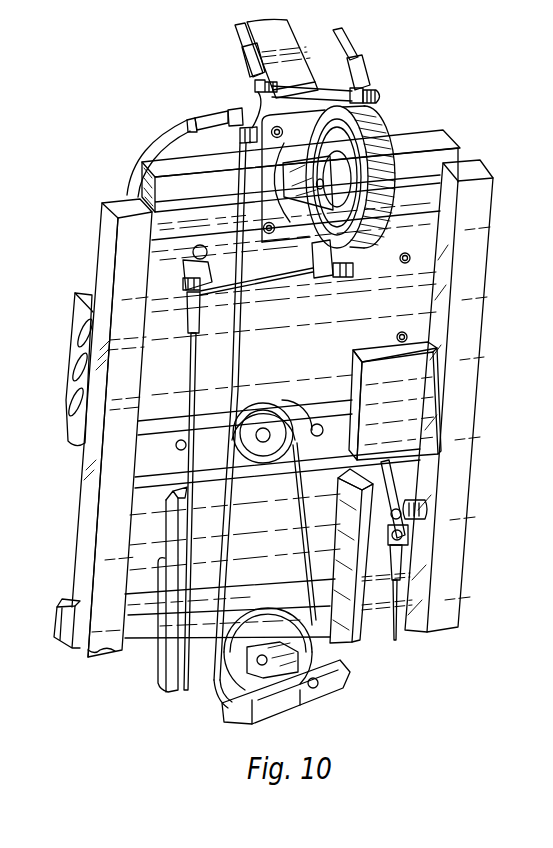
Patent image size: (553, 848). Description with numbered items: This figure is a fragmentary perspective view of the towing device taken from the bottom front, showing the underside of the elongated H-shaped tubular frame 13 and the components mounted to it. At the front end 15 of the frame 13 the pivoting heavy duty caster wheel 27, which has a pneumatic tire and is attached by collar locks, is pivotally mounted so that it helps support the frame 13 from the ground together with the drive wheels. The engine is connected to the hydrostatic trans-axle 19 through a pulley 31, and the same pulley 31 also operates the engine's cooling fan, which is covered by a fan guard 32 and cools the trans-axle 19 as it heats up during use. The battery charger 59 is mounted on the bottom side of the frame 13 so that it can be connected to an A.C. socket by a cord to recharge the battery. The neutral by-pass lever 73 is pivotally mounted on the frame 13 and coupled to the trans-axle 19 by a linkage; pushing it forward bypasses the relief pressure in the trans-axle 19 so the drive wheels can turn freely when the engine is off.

The frame 13 is at (483, 322).
The front end 15 is at (159, 132).
The trans-axle 19 is at (300, 698).
The caster wheel 27 is at (388, 125).
The pulley 31 is at (299, 406).
The fan guard 32 is at (160, 660).
The battery charger 59 is at (405, 386).
The neutral by-pass lever 73 is at (400, 480).